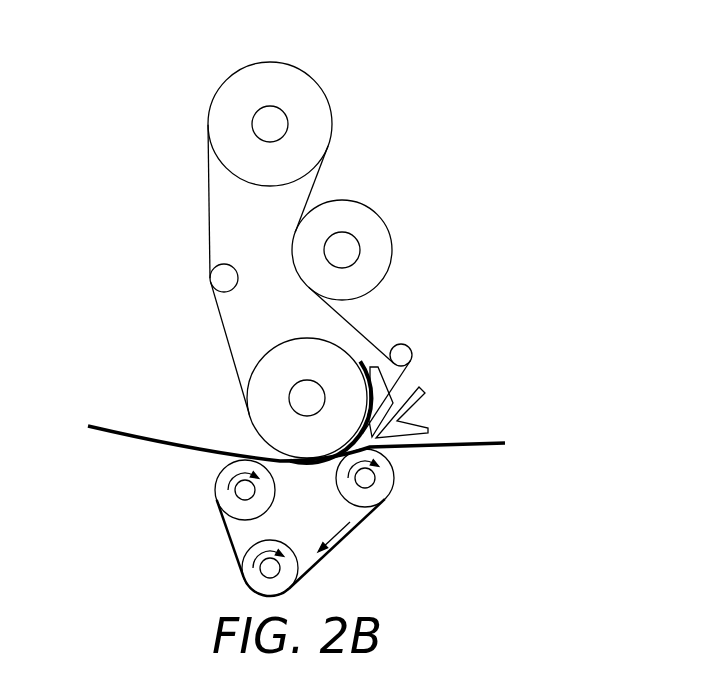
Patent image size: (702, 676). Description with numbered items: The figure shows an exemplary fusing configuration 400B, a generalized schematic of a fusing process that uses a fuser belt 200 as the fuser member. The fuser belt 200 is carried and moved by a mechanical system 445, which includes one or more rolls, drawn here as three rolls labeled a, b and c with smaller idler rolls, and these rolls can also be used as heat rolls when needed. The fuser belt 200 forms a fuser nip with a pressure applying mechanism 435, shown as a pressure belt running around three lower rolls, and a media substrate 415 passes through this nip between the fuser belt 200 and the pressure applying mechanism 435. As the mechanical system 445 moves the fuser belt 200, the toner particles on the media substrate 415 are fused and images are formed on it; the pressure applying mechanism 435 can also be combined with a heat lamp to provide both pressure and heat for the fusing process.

The fusing configuration 400B is at (393, 76).
The mechanical system 445 is at (339, 163).
The fuser belt 200 is at (228, 345).
The media substrate 415 is at (258, 449).
The pressure applying mechanism 435 is at (208, 487).